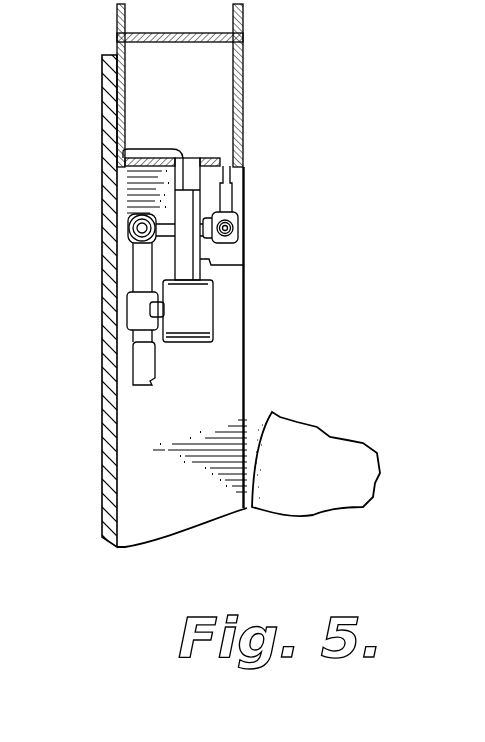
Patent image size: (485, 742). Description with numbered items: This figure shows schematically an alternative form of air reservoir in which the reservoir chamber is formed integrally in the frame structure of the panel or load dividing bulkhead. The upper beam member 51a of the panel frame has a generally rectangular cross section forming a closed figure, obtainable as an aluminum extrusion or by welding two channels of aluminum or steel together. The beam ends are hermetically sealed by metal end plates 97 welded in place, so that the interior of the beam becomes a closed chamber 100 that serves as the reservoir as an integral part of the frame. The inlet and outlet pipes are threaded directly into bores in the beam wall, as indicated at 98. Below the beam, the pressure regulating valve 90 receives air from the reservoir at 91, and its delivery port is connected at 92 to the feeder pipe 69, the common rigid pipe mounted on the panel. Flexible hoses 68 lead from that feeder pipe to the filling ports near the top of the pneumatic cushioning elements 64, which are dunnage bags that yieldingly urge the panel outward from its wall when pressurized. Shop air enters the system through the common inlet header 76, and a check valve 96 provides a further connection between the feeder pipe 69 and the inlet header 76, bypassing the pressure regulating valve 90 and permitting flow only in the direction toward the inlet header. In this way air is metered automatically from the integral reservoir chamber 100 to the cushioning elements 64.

The closed chamber 100 is at (198, 88).
The upper beam member 51a is at (243, 87).
The metal end plates 97 is at (207, 134).
The bores in the beam wall 98 is at (125, 153).
The check valve 96 is at (130, 212).
The feeder pipe 69 is at (146, 241).
The delivery port connection 92 is at (143, 312).
The flexible hoses 68 is at (140, 358).
The inlet header 76 is at (236, 226).
The reservoir inlet connection 91 is at (211, 265).
The pressure regulating valve 90 is at (217, 322).
The pneumatic cushioning elements 64 is at (350, 492).